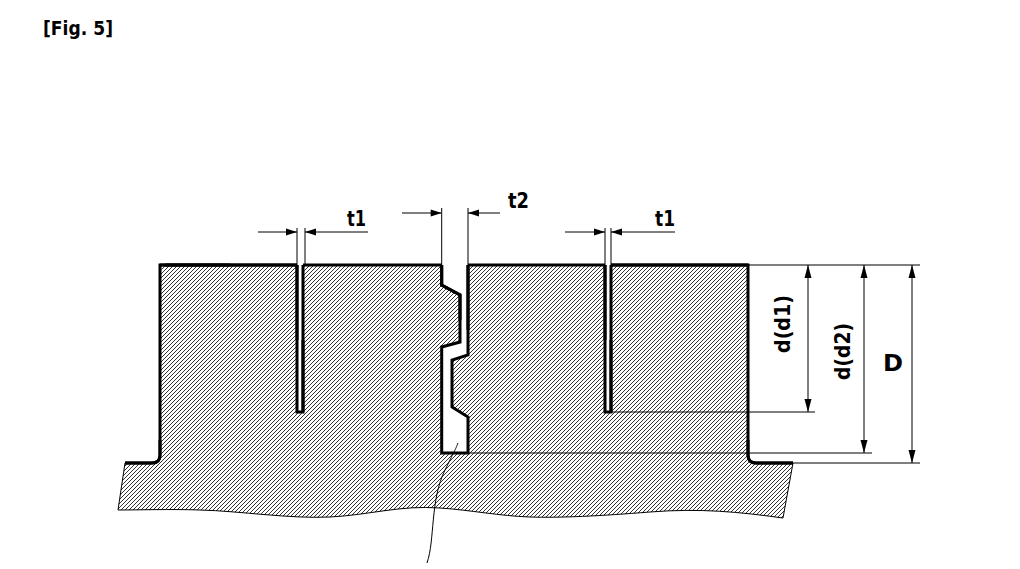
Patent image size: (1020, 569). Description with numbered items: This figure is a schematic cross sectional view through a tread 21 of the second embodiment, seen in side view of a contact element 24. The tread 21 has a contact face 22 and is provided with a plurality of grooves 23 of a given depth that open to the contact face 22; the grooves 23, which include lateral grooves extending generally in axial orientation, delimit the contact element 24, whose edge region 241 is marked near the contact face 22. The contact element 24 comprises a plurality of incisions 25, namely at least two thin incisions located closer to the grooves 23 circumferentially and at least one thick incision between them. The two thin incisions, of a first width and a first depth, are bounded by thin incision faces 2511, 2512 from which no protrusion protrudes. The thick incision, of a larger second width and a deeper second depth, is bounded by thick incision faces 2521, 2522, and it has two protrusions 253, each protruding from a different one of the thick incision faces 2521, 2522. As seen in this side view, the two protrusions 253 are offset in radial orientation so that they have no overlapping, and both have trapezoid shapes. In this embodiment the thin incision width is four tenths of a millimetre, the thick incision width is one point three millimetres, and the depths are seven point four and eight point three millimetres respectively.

The tread 21 is at (640, 156).
The contact face 22 is at (730, 262).
The grooves 23 is at (145, 447).
The contact element 24 is at (160, 264).
The edge of first surface 241 is at (187, 263).
The incisions 25 is at (300, 413).
The thin incision face 2511 is at (297, 303).
The thin incision face 2512 is at (303, 385).
The thick incision face 2521 is at (440, 280).
The thick incision face 2522 is at (469, 286).
The protrusions 253 is at (448, 310).